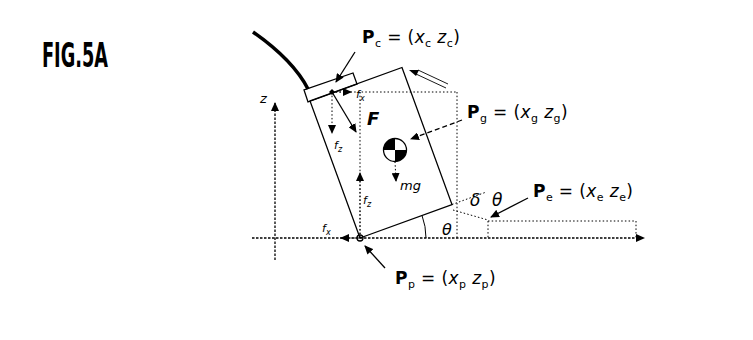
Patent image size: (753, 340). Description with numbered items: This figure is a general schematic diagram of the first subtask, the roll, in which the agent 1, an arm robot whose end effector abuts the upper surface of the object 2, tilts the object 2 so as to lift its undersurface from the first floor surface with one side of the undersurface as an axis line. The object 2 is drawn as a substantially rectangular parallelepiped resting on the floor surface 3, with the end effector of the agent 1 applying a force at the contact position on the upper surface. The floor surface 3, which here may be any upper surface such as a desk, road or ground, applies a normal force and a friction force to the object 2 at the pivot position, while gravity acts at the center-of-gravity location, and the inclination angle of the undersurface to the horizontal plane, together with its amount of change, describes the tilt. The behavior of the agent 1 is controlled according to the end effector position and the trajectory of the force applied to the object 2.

The agent 1 is at (326, 71).
The object 2 is at (311, 131).
The ground surface 3 is at (448, 249).